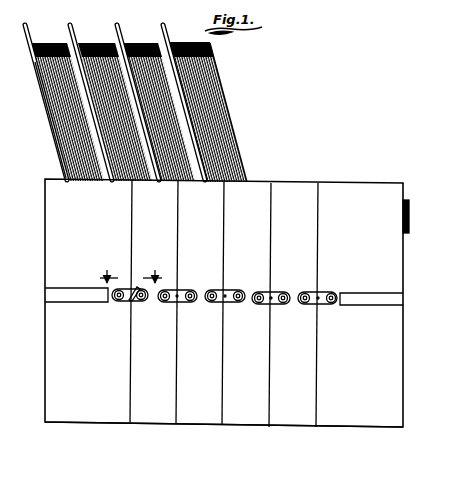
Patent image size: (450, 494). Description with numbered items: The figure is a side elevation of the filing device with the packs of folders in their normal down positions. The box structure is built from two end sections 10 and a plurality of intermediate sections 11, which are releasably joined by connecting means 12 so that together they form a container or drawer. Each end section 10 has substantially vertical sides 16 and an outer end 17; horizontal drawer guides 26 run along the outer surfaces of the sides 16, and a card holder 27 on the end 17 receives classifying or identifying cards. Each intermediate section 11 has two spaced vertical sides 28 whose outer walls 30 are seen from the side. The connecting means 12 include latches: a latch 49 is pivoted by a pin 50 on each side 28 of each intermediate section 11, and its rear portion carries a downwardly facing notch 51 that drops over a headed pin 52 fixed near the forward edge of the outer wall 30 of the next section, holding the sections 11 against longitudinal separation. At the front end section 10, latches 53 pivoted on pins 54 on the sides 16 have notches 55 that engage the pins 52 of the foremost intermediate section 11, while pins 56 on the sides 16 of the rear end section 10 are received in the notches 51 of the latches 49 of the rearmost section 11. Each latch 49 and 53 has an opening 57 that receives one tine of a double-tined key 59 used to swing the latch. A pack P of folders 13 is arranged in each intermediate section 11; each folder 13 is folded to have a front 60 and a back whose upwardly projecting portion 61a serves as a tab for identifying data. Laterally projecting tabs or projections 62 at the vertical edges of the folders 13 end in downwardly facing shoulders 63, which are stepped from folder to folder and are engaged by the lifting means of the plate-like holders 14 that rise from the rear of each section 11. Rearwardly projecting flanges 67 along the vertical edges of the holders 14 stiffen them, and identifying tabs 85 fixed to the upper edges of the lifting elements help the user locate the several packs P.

The end section 10 is at (363, 182).
The intermediate section 11 is at (260, 181).
The connecting means 12 is at (263, 289).
The folder 13 is at (142, 42).
The holder 14 is at (43, 133).
The side 16 is at (223, 301).
The outer end 17 is at (137, 268).
The drawer guide 26 is at (85, 293).
The card holder 27 is at (411, 212).
The side 28 is at (290, 414).
The outer wall 30 is at (227, 302).
The latch 49 is at (218, 294).
The pin 50 is at (227, 303).
The notch 51 is at (259, 304).
The headed pin 52 is at (305, 293).
The latch 53 is at (331, 293).
The pin 54 is at (331, 304).
The notch 55 is at (303, 304).
The pin 56 is at (116, 300).
The opening 57 is at (177, 302).
The key 59 is at (134, 300).
The front 60 is at (216, 66).
The upwardly projecting portion 61a is at (207, 48).
The projection 62 is at (440, 101).
The shoulder 63 is at (440, 157).
The flange 67 is at (52, 150).
The tab 85 is at (58, 22).
The pack P is at (110, 43).